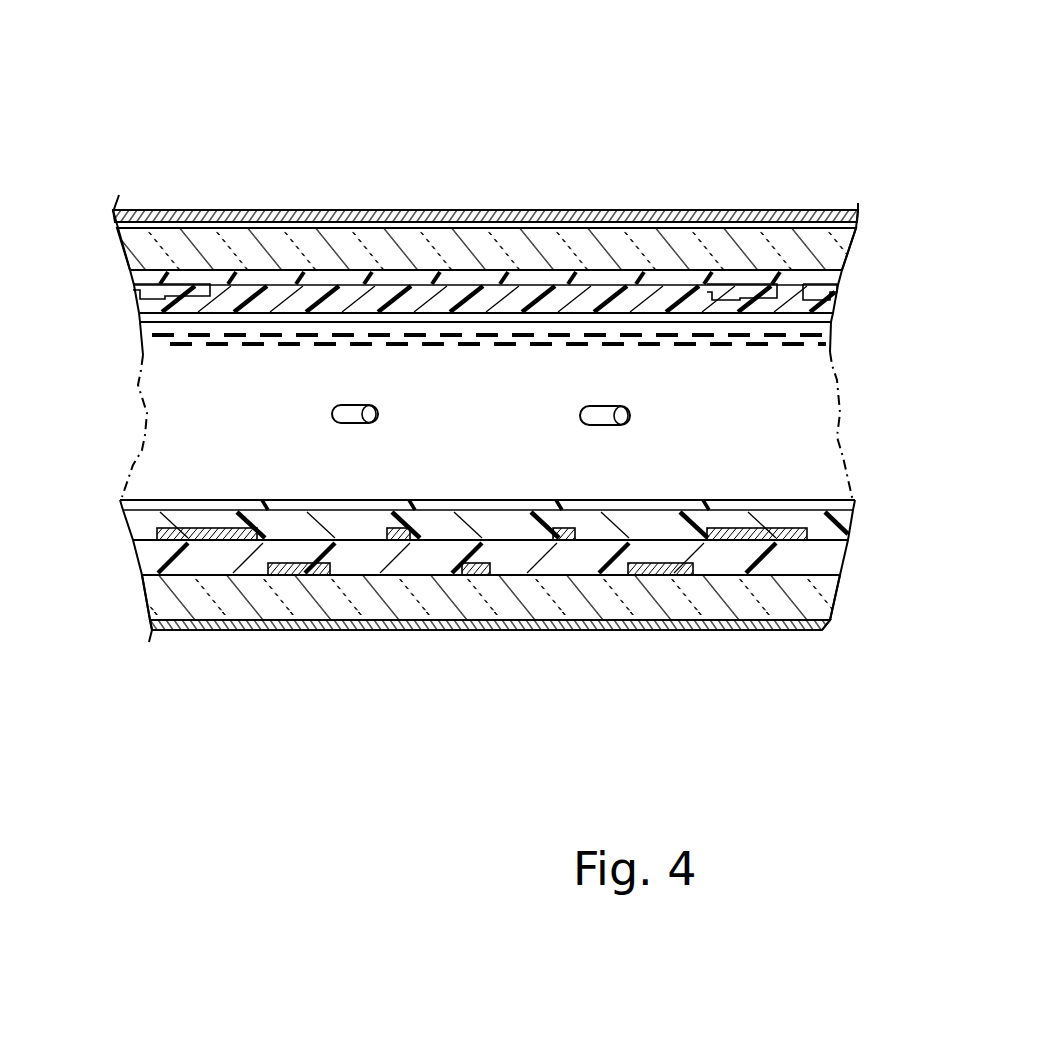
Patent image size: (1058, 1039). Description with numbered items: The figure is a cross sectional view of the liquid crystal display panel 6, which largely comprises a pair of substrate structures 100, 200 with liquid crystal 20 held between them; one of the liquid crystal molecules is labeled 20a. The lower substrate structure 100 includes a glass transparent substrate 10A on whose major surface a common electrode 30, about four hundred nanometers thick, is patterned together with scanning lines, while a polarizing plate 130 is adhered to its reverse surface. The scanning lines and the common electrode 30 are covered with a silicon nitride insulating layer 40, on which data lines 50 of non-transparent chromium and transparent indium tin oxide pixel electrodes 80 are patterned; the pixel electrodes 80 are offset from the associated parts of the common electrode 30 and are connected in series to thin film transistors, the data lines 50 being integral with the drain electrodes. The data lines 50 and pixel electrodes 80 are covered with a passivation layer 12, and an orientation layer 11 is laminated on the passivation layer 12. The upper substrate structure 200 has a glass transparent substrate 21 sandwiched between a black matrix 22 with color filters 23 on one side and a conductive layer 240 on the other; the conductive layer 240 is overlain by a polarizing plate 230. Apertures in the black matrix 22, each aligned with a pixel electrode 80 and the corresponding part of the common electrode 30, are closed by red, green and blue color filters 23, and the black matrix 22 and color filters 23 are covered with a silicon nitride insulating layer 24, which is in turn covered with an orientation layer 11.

The liquid crystal display panel 6 is at (850, 127).
The substrate structure 200 is at (487, 158).
The conductive layer 240 is at (270, 214).
The polarizing plate 230 is at (433, 211).
The transparent substrate 21 is at (164, 252).
The black matrix 22 is at (793, 258).
The insulating layer 24 is at (585, 300).
The color filter 23 is at (138, 292).
The liquid crystal 20 is at (817, 360).
The liquid crystal molecule 20a is at (625, 415).
The orientation layer 11 is at (211, 318).
The passivation layer 12 is at (362, 524).
The pixel electrode 80 is at (406, 545).
The data line 50 is at (763, 541).
The insulating layer 40 is at (709, 568).
The common electrode 30 is at (653, 575).
The transparent substrate 10A is at (190, 632).
The polarizing plate 130 is at (292, 630).
The substrate structure 100 is at (531, 702).